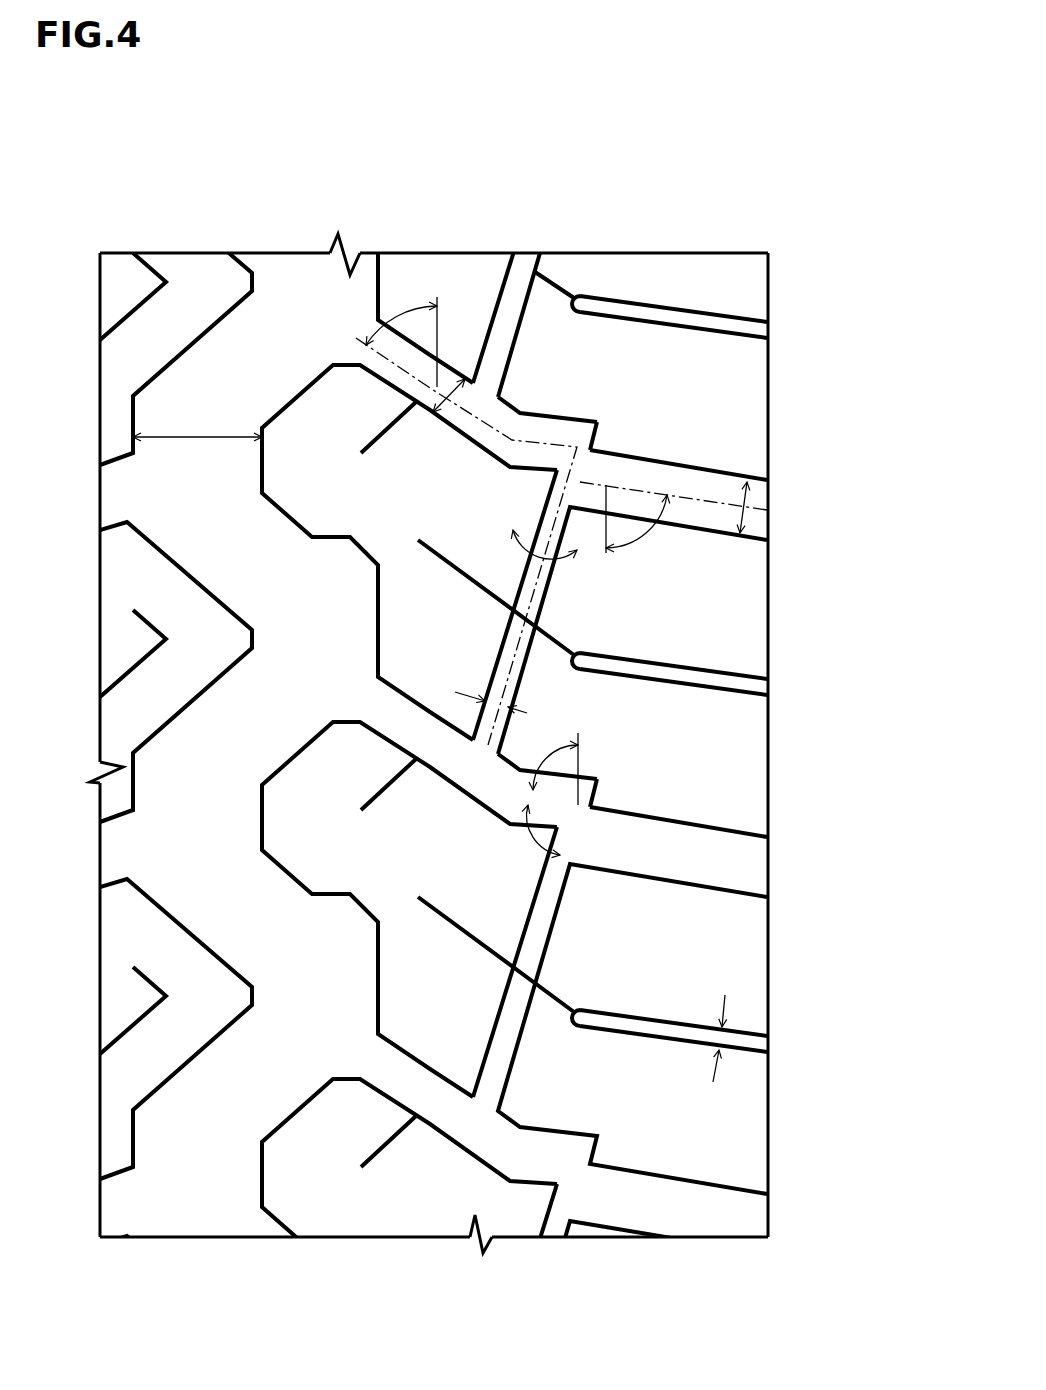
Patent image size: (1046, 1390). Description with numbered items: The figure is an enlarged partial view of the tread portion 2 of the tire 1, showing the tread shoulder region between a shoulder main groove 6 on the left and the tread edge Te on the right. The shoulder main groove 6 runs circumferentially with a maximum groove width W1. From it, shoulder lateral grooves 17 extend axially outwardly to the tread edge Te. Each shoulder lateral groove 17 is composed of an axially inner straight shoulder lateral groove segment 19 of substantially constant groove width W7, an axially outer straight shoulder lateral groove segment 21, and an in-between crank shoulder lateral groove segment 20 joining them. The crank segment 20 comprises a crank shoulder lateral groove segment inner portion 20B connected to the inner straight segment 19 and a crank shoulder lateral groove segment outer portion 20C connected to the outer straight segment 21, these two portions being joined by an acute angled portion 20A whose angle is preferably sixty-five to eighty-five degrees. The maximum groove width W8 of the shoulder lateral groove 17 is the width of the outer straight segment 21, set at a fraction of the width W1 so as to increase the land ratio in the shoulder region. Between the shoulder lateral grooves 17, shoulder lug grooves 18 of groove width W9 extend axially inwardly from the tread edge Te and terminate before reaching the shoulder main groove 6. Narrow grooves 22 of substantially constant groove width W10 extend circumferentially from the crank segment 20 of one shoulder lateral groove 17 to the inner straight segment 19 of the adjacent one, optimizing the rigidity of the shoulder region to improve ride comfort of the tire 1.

The tire 1 is at (801, 147).
The tread portion 2 is at (613, 200).
The shoulder main groove 6 is at (294, 278).
The tread edge Te is at (769, 292).
The shoulder lateral groove 17 is at (466, 770).
The shoulder lug groove 18 is at (666, 1034).
The axially inner straight shoulder lateral groove segment 19 is at (502, 413).
The in-between crank shoulder lateral groove segment 20 is at (700, 770).
The acute angled portion 20A is at (596, 793).
The crank shoulder lateral groove segment inner portion 20B is at (600, 777).
The crank shoulder lateral groove segment outer portion 20C is at (580, 836).
The axially outer straight shoulder lateral groove segment 21 is at (713, 464).
The narrow groove 22 is at (550, 493).
The maximum groove width of shoulder main groove W1 is at (198, 433).
The groove width of axially inner straight shoulder lateral groove segment W7 is at (447, 386).
The maximum groove width of shoulder lateral groove W8 is at (745, 508).
The groove width of shoulder lug groove W9 is at (722, 1036).
The groove width of narrow groove W10 is at (465, 693).